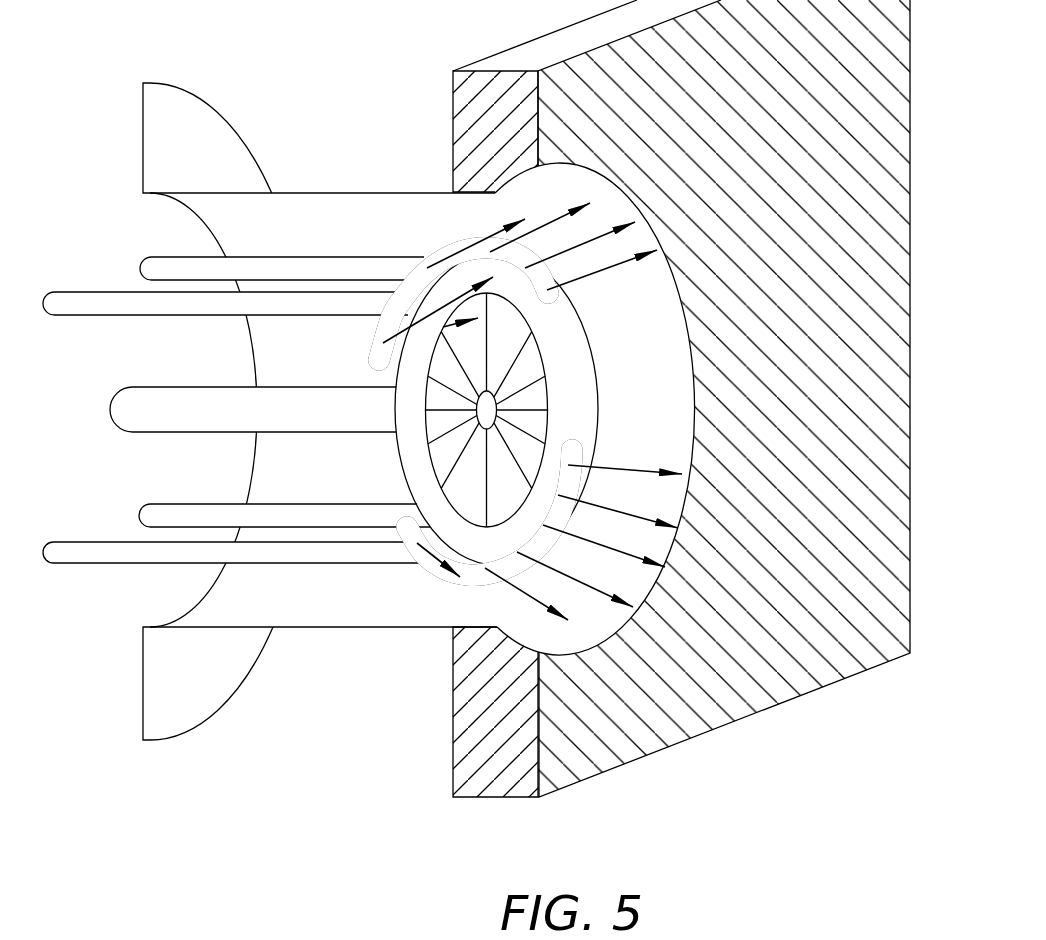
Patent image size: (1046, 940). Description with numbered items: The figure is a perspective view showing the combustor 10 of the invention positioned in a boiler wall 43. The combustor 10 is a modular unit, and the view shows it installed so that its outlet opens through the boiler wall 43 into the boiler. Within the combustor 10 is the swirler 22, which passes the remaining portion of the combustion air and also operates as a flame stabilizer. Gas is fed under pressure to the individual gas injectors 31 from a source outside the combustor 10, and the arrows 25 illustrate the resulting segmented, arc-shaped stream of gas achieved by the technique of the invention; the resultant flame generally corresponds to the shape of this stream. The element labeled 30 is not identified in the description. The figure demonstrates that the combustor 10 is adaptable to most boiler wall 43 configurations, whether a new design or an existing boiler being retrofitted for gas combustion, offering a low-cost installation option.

The combustor 10 is at (337, 100).
The swirler 22 is at (412, 440).
The arrows 25 is at (600, 272).
The vane 30 is at (383, 328).
The gas injectors 31 is at (555, 284).
The boiler wall 43 is at (783, 672).